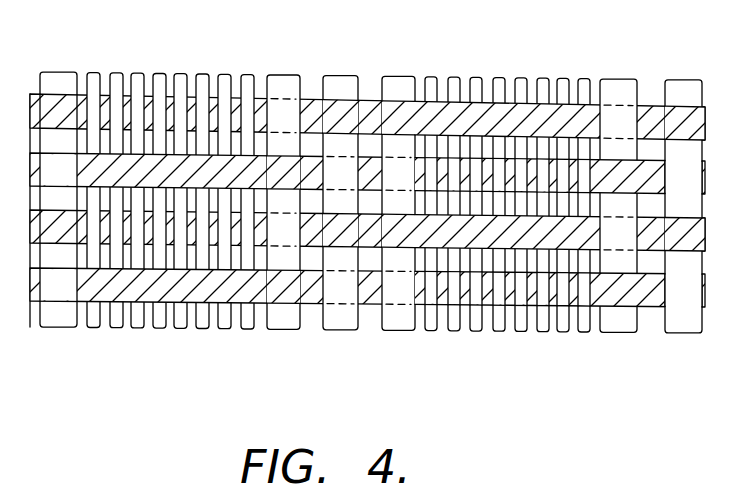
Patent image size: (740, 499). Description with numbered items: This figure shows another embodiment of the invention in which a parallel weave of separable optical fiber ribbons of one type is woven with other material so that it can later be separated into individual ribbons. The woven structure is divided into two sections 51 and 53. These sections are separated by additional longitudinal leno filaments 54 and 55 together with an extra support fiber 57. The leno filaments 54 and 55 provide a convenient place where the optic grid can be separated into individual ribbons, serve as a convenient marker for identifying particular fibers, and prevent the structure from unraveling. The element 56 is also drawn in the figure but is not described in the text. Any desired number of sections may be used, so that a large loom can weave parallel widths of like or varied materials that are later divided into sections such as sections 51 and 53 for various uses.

The section 51 is at (325, 355).
The section 53 is at (705, 353).
The longitudinal leno filament 54 is at (318, 96).
The longitudinal leno filament 55 is at (368, 97).
The end bar 56 is at (650, 80).
The extra support fiber 57 is at (345, 88).